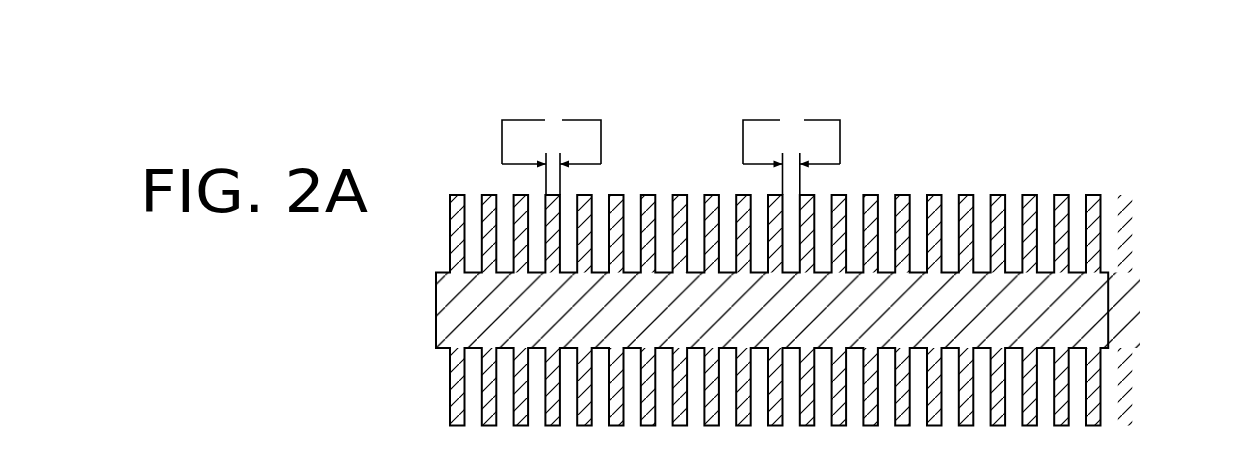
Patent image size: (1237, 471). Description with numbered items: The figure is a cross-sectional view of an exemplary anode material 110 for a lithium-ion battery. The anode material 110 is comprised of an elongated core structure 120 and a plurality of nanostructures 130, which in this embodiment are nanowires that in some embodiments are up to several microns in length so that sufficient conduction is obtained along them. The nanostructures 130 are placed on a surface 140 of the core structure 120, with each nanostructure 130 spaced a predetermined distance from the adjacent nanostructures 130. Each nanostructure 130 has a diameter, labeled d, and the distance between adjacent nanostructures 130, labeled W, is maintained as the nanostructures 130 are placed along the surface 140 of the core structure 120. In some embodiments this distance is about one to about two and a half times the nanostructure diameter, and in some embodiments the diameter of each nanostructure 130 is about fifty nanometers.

The anode material 110 is at (1132, 130).
The core structure 120 is at (436, 317).
The nanostructures 130 is at (967, 194).
The surface 140 is at (1077, 270).